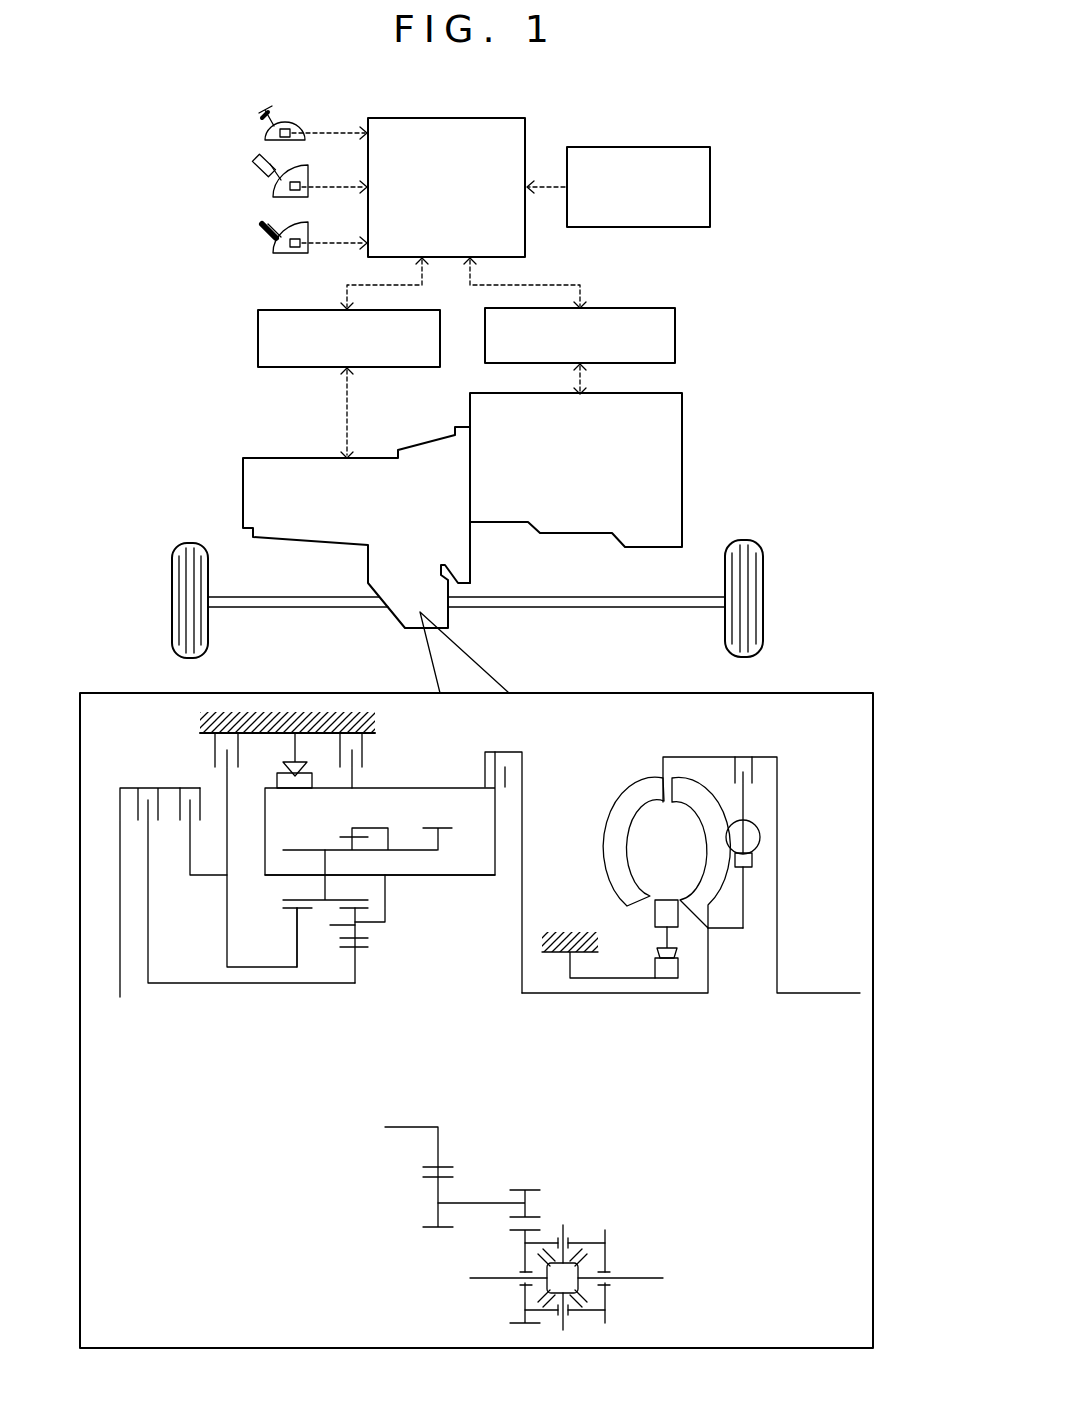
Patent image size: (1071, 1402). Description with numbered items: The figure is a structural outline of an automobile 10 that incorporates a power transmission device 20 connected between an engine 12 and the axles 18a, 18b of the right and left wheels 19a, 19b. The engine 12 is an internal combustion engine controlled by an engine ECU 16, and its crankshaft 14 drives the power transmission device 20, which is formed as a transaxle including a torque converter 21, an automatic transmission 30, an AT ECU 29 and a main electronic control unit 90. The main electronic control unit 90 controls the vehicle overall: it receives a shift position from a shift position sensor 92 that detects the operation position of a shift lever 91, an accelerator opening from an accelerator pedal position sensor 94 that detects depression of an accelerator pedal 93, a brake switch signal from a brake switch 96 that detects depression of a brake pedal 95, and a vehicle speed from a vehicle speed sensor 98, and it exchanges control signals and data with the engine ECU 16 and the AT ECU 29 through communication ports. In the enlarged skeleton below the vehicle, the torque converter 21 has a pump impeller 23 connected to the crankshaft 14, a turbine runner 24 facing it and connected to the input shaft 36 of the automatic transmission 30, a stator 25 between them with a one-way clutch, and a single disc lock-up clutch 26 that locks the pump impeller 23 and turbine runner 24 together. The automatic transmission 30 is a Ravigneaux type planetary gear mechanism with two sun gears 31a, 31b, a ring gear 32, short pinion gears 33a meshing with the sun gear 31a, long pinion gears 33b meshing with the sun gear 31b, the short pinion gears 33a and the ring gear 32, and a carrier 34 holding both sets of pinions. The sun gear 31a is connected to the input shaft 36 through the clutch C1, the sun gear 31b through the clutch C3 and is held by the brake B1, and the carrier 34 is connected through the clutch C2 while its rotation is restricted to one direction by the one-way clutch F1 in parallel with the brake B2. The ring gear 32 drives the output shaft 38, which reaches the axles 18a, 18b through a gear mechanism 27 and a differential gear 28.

The automobile 10 is at (343, 82).
The engine 12 is at (684, 451).
The crankshaft 14 is at (807, 995).
The engine electronic control unit 16 is at (677, 331).
The axle 18a is at (600, 597).
The axle 18b is at (305, 597).
The wheel 19a is at (765, 600).
The wheel 19b is at (170, 600).
The power transmission device 20 is at (243, 492).
The torque converter 21 is at (649, 780).
The pump impeller 23 is at (622, 822).
The turbine runner 24 is at (698, 792).
The stator 25 is at (652, 912).
The single disc lock-up clutch 26 is at (760, 827).
The gear mechanism 27 is at (471, 1188).
The differential gear 28 is at (580, 1214).
The automatic transmission electronic control unit 29 is at (290, 308).
The automatic transmission 30 is at (537, 779).
The sun gear 31a is at (362, 948).
The sun gear 31b is at (293, 915).
The ring gear 32 is at (345, 838).
The short pinion gear 33a is at (365, 938).
The long pinion gear 33b is at (335, 848).
The carrier 34 is at (398, 877).
The input shaft 36 is at (597, 996).
The output shaft 38 is at (405, 848).
The main electronic control unit 90 is at (510, 118).
The shift lever 91 is at (268, 118).
The shift position sensor 92 is at (280, 133).
The accelerator pedal 93 is at (268, 168).
The accelerator pedal position sensor 94 is at (290, 186).
The brake pedal 95 is at (275, 232).
The brake switch 96 is at (290, 243).
The vehicle speed sensor 98 is at (712, 181).
The brake B1 is at (215, 750).
The brake B2 is at (363, 743).
The clutch C1 is at (145, 790).
The clutch C2 is at (505, 753).
The clutch C3 is at (190, 788).
The one-way clutch F1 is at (282, 772).